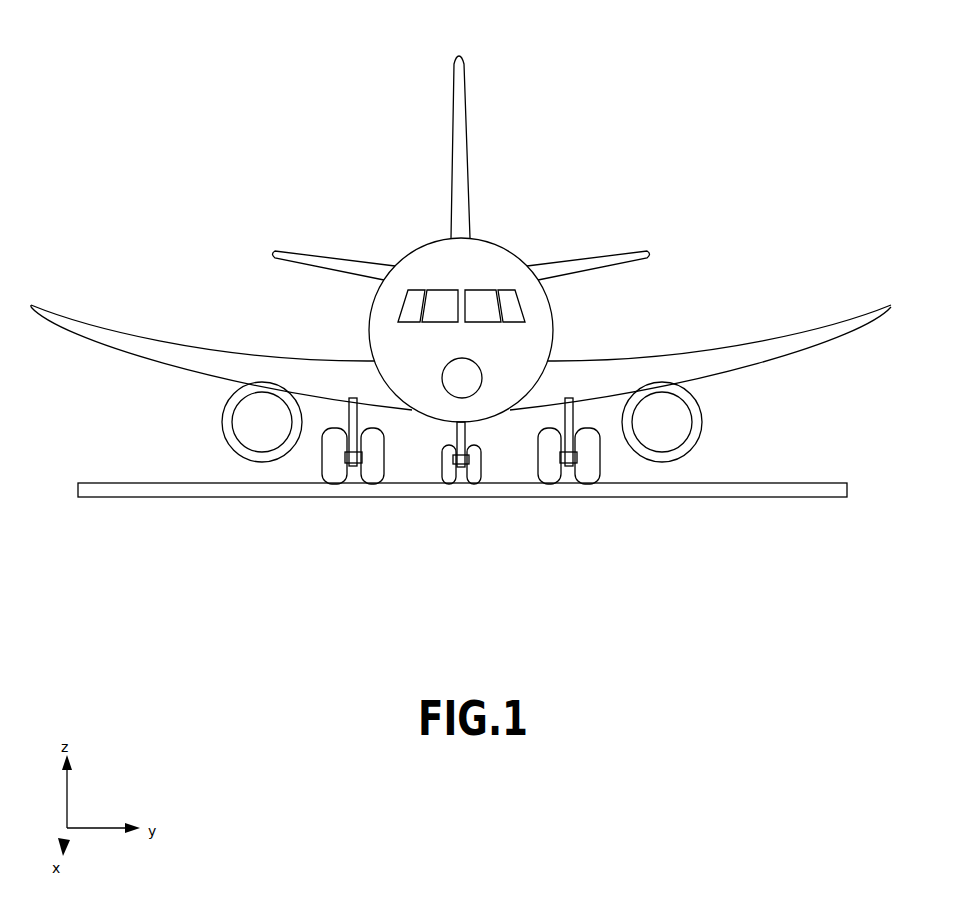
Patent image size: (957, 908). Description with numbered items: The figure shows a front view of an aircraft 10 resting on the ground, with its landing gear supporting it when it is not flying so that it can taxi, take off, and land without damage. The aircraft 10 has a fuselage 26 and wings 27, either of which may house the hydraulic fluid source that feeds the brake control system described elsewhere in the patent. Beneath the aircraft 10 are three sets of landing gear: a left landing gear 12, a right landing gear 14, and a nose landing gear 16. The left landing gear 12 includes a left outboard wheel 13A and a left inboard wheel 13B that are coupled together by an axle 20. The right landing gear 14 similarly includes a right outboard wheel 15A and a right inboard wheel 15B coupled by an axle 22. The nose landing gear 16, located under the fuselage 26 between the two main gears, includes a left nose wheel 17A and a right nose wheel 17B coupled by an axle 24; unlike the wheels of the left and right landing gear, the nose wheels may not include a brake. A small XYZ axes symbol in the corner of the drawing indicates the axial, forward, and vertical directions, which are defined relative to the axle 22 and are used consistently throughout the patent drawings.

The aircraft 10 is at (297, 152).
The left landing gear 12 is at (652, 433).
The left outboard (LOB) wheel 13A is at (606, 477).
The left inboard (LIB) wheel 13B is at (557, 428).
The right landing gear 14 is at (268, 507).
The right outboard (ROB) wheel 15A is at (320, 474).
The right inboard (RIB) wheel 15B is at (386, 478).
The nose landing gear 16 is at (508, 453).
The left nose wheel 17A is at (486, 478).
The right nose wheel 17B is at (440, 476).
The axle 20 is at (569, 472).
The axle 22 is at (352, 470).
The axle 24 is at (462, 472).
The fuselage 26 is at (380, 324).
The wings 27 is at (189, 362).